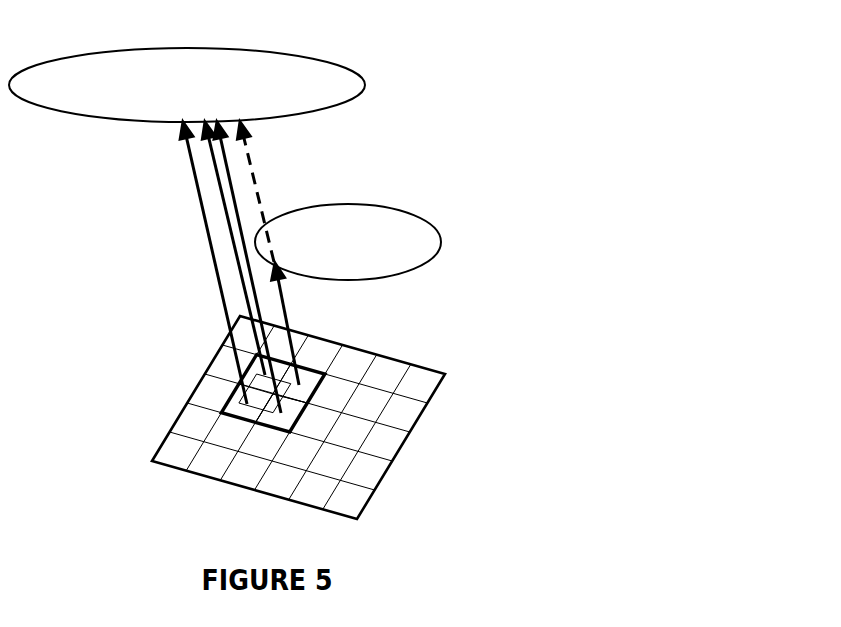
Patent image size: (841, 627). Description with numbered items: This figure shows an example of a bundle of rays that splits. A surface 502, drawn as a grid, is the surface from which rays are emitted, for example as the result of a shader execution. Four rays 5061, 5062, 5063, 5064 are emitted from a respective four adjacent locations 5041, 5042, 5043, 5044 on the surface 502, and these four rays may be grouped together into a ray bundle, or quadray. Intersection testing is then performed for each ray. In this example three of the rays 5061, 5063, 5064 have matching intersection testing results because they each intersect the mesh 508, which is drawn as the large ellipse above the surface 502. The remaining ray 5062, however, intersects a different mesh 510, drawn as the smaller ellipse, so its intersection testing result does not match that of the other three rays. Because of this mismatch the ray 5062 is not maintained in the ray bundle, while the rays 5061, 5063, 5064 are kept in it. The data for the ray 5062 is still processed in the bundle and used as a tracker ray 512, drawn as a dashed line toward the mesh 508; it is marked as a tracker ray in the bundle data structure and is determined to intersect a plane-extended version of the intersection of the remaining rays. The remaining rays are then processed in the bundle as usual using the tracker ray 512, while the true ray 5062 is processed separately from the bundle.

The surface 502 is at (152, 461).
The first location on the surface 5041 is at (243, 370).
The second location on the surface 5042 is at (322, 385).
The third location on the surface 5043 is at (232, 398).
The fourth location on the surface 5044 is at (292, 423).
The first ray 5061 is at (230, 236).
The second ray 5062 is at (287, 304).
The third ray 5063 is at (195, 185).
The fourth ray 5064 is at (255, 305).
The mesh 508 is at (365, 85).
The different mesh 510 is at (442, 240).
The tracker ray 512 is at (250, 157).